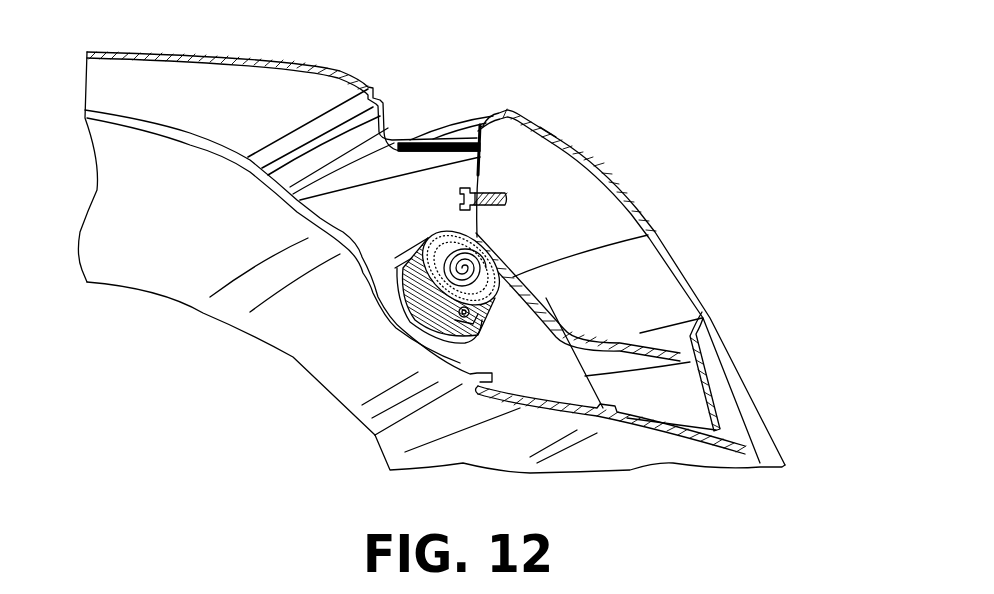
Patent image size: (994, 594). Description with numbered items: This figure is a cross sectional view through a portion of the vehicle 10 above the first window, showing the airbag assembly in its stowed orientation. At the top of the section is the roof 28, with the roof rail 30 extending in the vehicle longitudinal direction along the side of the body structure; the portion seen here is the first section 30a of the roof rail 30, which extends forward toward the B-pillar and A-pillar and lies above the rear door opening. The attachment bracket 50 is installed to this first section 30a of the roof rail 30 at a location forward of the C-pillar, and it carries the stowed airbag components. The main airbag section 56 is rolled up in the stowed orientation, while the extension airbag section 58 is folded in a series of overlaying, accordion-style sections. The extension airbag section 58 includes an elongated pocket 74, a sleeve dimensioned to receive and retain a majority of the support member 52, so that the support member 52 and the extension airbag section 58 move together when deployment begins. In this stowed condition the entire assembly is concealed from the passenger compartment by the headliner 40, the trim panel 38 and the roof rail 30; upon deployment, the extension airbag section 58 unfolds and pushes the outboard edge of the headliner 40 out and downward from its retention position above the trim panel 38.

The vehicle 10 is at (545, 93).
The roof 28 is at (288, 60).
The roof rail 30 is at (608, 177).
The first section 30a is at (552, 140).
The trim panel 38 is at (490, 452).
The headliner 40 is at (317, 352).
The attachment bracket 50 is at (500, 258).
The support member 52 is at (476, 317).
The main airbag section 56 is at (443, 240).
The extension airbag section 58 is at (413, 250).
The elongated pocket 74 is at (471, 307).